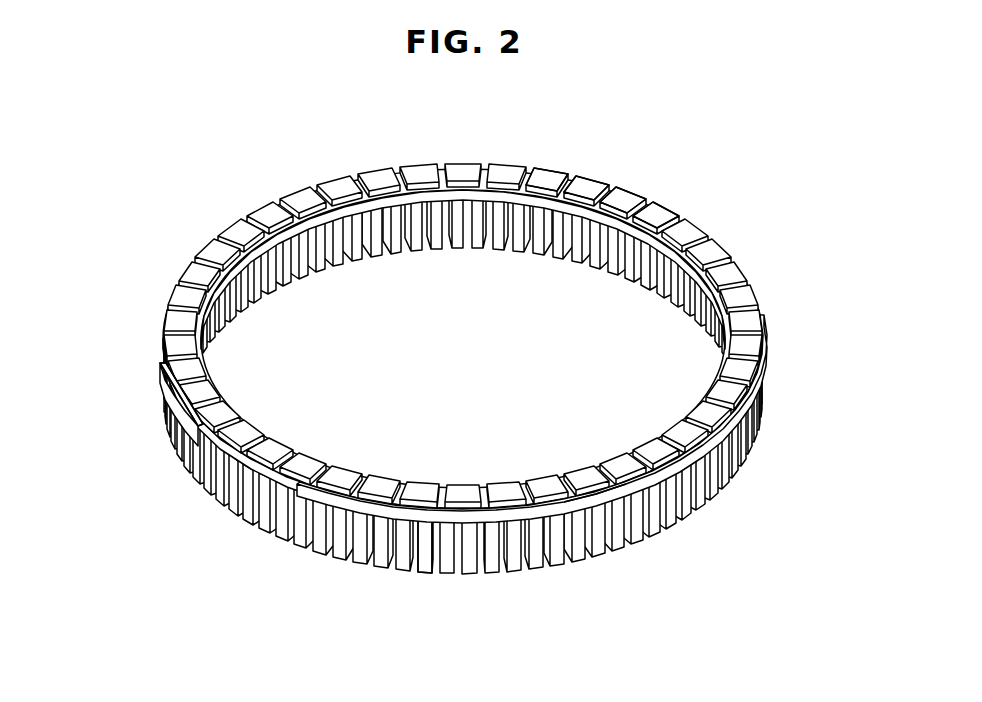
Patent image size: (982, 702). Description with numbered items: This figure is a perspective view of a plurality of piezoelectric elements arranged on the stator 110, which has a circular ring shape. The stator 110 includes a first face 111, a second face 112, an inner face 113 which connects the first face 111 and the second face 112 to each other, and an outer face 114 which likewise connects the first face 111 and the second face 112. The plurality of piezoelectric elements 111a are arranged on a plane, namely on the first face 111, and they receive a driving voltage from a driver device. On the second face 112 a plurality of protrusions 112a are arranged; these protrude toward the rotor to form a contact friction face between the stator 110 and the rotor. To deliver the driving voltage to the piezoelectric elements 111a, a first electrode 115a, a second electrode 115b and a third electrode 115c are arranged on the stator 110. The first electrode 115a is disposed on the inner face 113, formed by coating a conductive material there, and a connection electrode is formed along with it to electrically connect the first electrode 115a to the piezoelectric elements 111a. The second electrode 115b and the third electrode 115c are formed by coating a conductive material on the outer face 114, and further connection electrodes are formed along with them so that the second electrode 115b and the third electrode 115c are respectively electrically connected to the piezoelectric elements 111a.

The stator 110 is at (440, 372).
The first face 111 is at (235, 447).
The piezoelectric elements 111a is at (664, 215).
The second face 112 is at (463, 418).
The protrusions 112a is at (430, 575).
The inner face 113 is at (432, 208).
The outer face 114 is at (247, 470).
The first electrode 115a is at (463, 297).
The second electrode 115b is at (123, 410).
The third electrode 115c is at (532, 476).